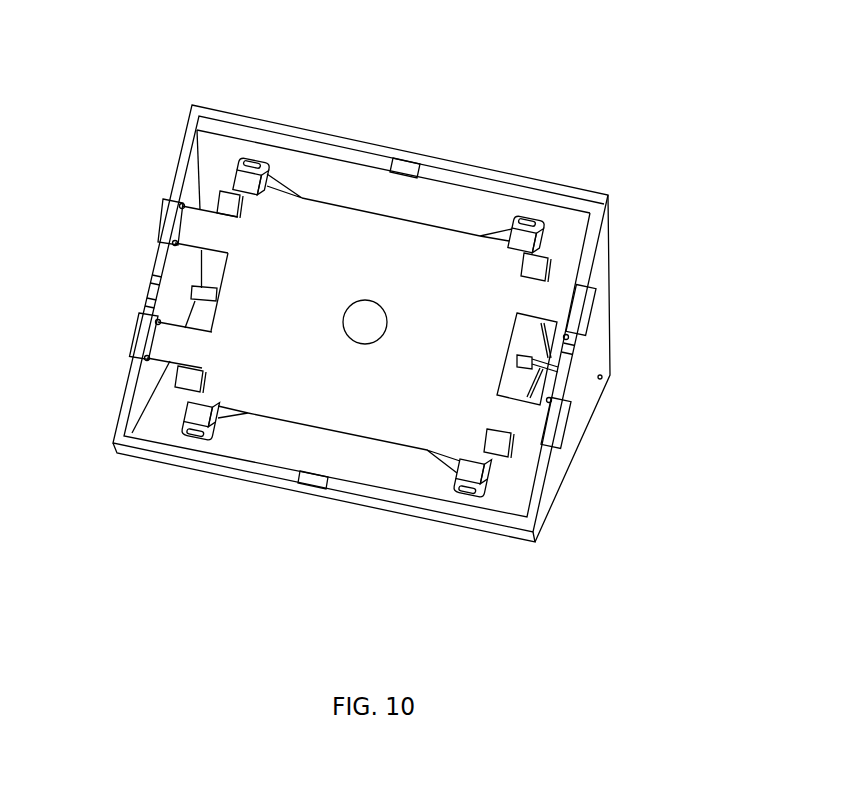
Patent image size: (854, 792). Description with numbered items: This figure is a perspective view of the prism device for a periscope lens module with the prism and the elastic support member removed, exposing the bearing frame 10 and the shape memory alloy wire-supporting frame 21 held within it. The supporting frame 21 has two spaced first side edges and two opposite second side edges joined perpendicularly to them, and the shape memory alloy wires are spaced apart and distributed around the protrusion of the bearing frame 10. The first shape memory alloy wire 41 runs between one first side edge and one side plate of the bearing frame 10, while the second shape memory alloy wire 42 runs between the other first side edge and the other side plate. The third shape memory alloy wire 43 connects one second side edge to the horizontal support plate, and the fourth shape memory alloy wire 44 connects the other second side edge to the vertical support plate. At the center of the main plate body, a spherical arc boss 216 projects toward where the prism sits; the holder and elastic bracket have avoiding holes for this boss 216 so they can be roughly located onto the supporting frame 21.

The bearing frame 10 is at (567, 388).
The shape memory alloy wire-supporting frame 21 is at (433, 248).
The spherical arc boss 216 is at (368, 330).
The first shape memory alloy wire 41 is at (546, 333).
The second shape memory alloy wire 42 is at (232, 217).
The third shape memory alloy wire 43 is at (228, 418).
The fourth shape memory alloy wire 44 is at (275, 200).